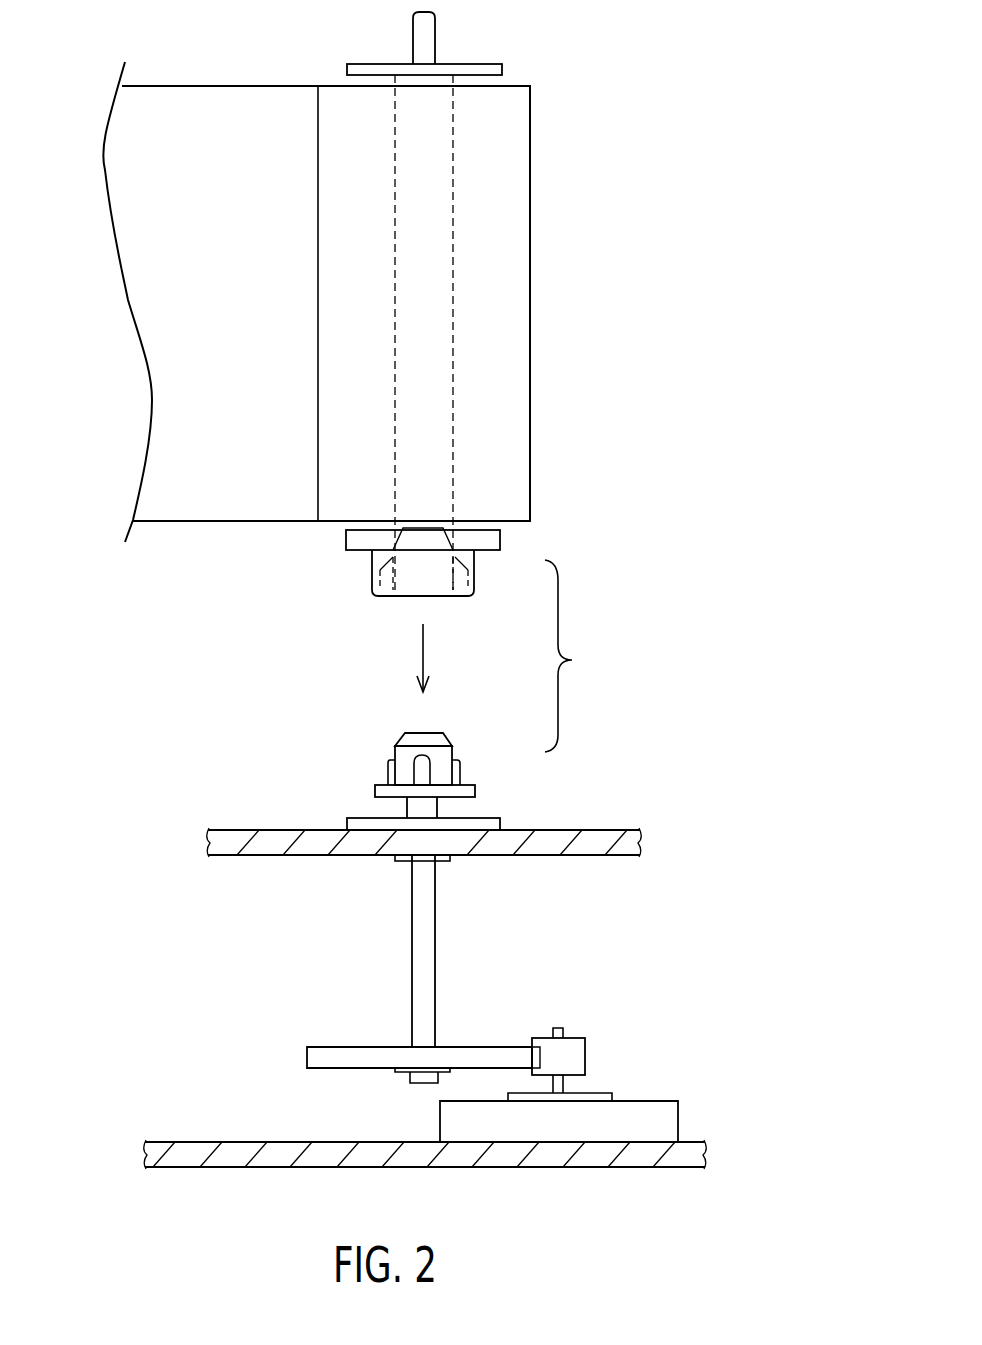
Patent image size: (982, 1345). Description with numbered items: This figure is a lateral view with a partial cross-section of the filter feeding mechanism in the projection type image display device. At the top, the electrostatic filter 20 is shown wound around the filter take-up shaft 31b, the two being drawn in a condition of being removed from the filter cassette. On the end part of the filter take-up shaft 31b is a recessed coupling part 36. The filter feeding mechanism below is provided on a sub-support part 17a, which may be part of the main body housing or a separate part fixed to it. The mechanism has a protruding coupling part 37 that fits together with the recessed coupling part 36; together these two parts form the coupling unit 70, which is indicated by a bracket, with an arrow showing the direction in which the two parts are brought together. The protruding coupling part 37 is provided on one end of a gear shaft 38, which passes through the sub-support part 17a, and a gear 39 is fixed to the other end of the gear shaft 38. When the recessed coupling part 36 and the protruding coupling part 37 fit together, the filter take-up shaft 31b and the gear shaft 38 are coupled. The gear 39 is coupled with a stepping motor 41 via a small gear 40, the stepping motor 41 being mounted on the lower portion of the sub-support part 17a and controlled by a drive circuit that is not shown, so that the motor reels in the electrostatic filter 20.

The electrostatic filter 20 is at (523, 258).
The filter take-up shaft 31b is at (430, 30).
The recessed coupling part 36 is at (453, 580).
The coupling unit 70 is at (518, 656).
The protruding coupling part 37 is at (450, 736).
The sub-support part 17a is at (312, 847).
The gear shaft 38 is at (428, 940).
The gear 39 is at (307, 1057).
The small gear 40 is at (580, 1058).
The stepping motor 41 is at (668, 1124).